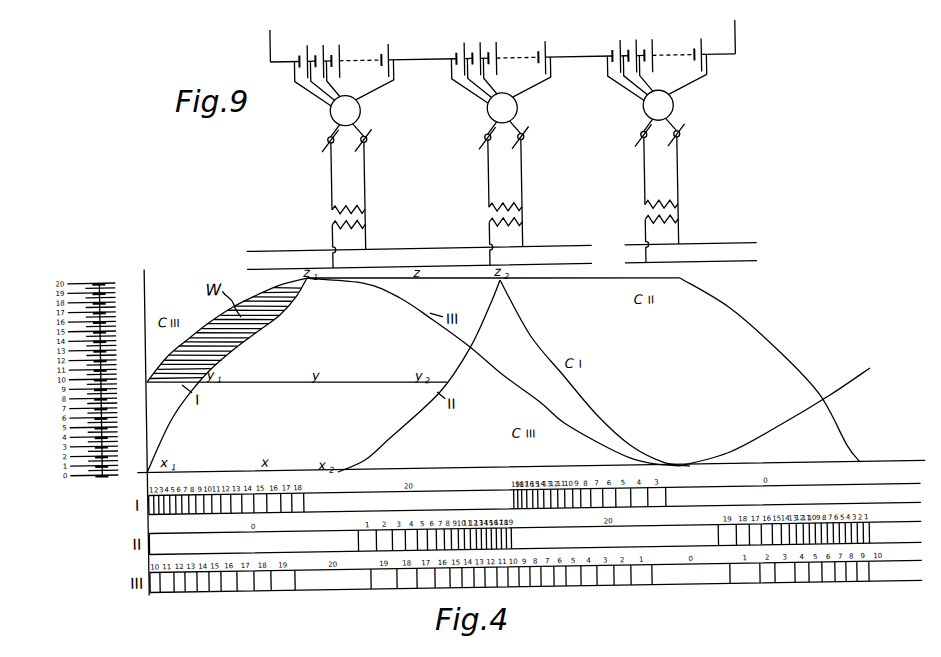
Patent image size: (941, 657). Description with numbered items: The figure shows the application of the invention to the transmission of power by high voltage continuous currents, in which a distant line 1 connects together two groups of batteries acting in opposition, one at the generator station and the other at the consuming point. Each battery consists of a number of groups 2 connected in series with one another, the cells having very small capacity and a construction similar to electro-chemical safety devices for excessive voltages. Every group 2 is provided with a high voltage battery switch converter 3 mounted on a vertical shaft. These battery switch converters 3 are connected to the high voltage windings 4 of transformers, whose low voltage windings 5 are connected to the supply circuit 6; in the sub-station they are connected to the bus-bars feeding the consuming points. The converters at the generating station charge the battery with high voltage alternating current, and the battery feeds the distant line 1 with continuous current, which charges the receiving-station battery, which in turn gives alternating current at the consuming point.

The distant line 1 is at (509, 41).
The battery groups 2 is at (503, 56).
The high voltage battery switch converter 3 is at (501, 108).
The high voltage windings 4 is at (511, 208).
The low voltage windings 5 is at (511, 224).
The supply circuit 6 is at (502, 256).